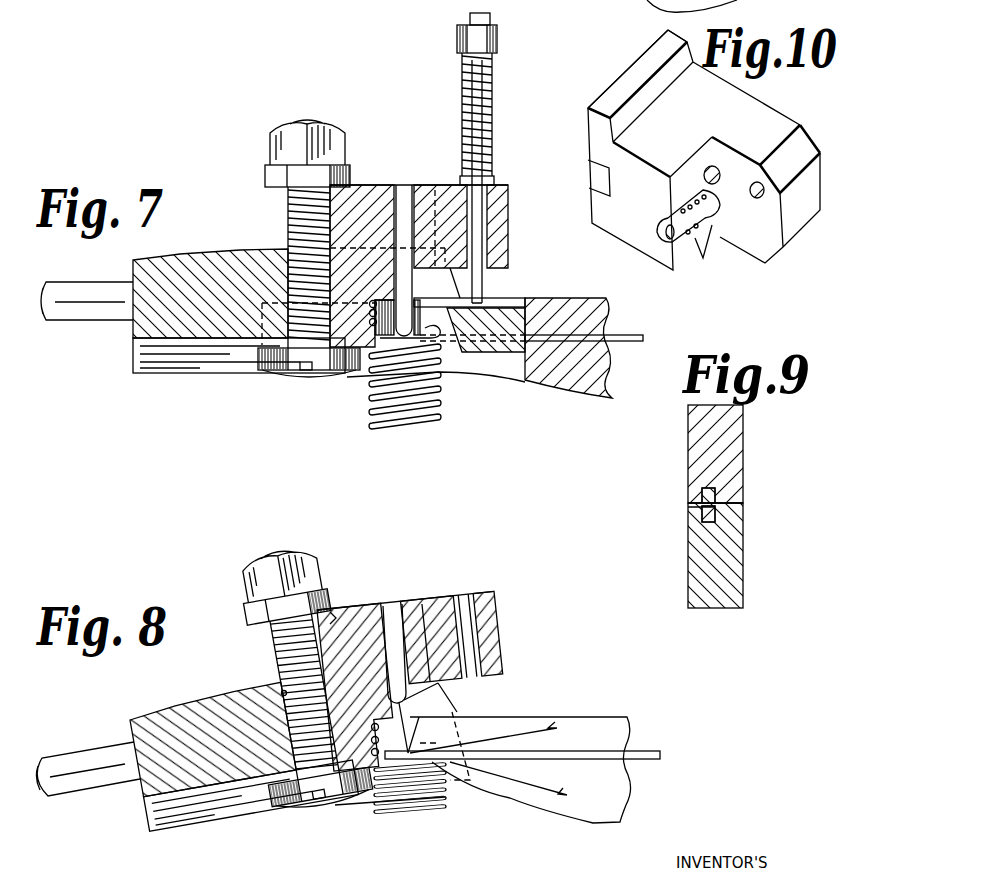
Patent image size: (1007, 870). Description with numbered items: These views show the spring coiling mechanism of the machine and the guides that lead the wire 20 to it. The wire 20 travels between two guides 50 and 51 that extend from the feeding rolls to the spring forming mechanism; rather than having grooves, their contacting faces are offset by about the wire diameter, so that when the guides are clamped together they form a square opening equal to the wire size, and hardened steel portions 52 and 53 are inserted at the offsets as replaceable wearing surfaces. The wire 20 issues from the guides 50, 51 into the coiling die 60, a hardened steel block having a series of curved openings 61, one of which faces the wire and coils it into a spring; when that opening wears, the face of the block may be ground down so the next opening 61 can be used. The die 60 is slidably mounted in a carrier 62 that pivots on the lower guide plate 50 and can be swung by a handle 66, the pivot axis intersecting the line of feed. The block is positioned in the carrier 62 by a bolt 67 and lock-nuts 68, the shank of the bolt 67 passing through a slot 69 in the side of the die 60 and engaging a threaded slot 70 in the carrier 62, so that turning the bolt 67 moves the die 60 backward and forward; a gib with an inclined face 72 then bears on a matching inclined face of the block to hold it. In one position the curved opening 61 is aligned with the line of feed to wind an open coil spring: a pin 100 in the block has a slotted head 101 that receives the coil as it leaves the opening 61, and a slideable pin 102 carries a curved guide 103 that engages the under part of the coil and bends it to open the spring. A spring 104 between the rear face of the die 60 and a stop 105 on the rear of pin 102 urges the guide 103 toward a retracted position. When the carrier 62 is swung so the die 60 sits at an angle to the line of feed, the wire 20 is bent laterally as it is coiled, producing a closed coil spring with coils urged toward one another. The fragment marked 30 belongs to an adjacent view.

In FIG. 7, the wire 20 is at (637, 326).
In FIG. 9, the wire 20 is at (716, 506).
In FIG. 8, the wire 20 is at (655, 752).
In FIG. 10, the fragment 30 is at (675, 11).
In FIG. 9, the lower guide plate 50 is at (738, 568).
In FIG. 8, the lower guide plate 50 is at (572, 720).
In FIG. 7, the guide 51 is at (580, 380).
In FIG. 9, the guide 51 is at (738, 434).
In FIG. 9, the hardened steel portion 52 is at (703, 516).
In FIG. 9, the hardened steel portion 53 is at (702, 495).
In FIG. 7, the coiling die 60 is at (503, 192).
In FIG. 10, the coiling die 60 is at (767, 117).
In FIG. 8, the coiling die 60 is at (427, 602).
In FIG. 10, the curved opening 61 is at (685, 242).
In FIG. 8, the curved opening 61 is at (413, 707).
In FIG. 7, the carrier 62 is at (215, 272).
In FIG. 8, the carrier 62 is at (193, 712).
In FIG. 7, the handle 66 is at (78, 302).
In FIG. 8, the handle 66 is at (77, 765).
In FIG. 7, the bolt 67 is at (300, 372).
In FIG. 8, the bolt 67 is at (307, 808).
In FIG. 7, the lock-nuts 68 is at (277, 140).
In FIG. 8, the lock-nuts 68 is at (250, 588).
In FIG. 10, the slot 69 is at (598, 168).
In FIG. 8, the slot 69 is at (334, 618).
In FIG. 8, the threaded slot 70 is at (284, 693).
In FIG. 10, the inclined face 72 is at (648, 87).
In FIG. 7, the pin 100 is at (404, 188).
In FIG. 8, the pin 100 is at (386, 605).
In FIG. 7, the slotted head 101 is at (425, 348).
In FIG. 7, the slideable pin 102 is at (486, 281).
In FIG. 7, the curved guide 103 is at (495, 350).
In FIG. 7, the spring 104 is at (497, 92).
In FIG. 7, the stop 105 is at (499, 36).